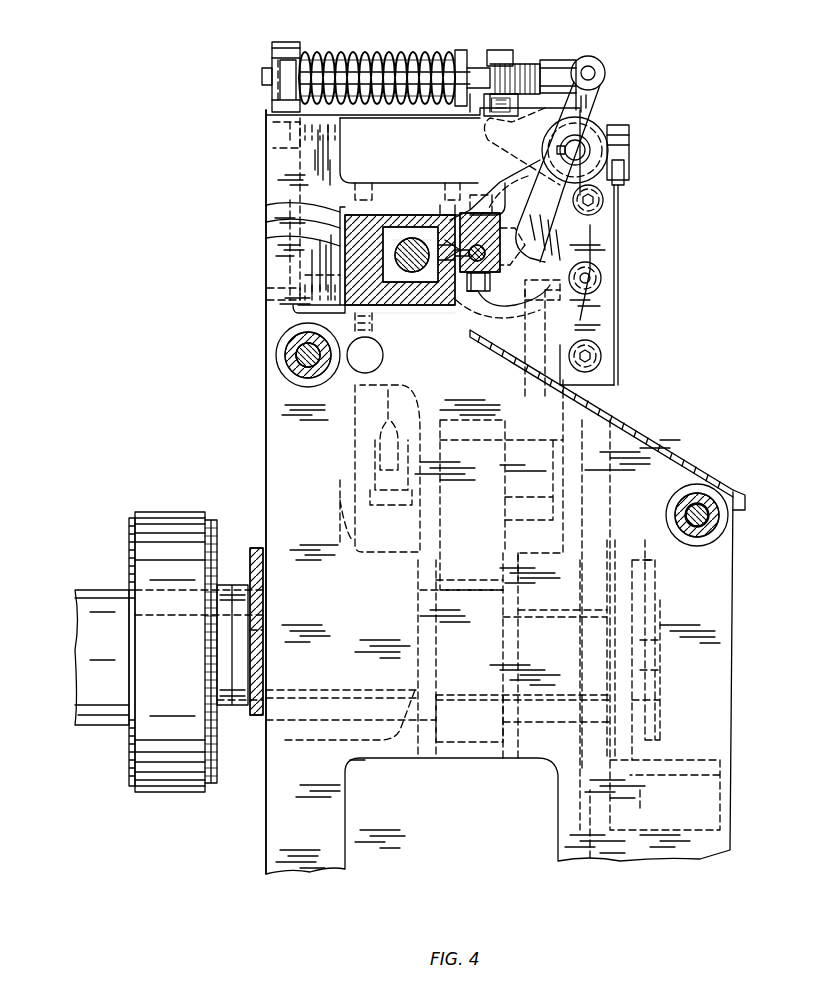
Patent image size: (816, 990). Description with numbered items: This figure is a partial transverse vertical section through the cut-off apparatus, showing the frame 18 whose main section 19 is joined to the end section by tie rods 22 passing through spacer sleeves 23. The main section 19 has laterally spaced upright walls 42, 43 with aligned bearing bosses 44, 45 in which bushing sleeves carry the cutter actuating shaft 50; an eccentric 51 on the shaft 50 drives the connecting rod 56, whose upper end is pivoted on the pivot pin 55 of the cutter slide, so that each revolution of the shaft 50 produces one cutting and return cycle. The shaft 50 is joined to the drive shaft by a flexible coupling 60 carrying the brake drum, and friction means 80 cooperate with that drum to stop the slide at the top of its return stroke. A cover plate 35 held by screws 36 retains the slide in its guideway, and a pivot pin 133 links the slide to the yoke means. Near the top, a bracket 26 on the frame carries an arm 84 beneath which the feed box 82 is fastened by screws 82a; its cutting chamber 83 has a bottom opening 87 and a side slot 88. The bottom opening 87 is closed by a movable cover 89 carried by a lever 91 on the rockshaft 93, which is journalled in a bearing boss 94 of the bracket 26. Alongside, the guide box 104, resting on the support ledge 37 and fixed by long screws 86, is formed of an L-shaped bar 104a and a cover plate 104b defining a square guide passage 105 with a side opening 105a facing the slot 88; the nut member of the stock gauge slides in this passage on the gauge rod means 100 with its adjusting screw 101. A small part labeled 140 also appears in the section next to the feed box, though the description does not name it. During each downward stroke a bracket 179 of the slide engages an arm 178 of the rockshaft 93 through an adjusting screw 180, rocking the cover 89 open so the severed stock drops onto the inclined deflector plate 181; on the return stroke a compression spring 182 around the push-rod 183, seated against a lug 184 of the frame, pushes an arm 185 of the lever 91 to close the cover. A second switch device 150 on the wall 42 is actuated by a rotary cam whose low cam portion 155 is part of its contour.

The frame 18 is at (264, 406).
The main section 19 is at (264, 404).
The tie rods 22 is at (690, 530).
The spacer sleeves 23 is at (700, 495).
The bracket 26 is at (345, 158).
The cover plate 35 is at (600, 318).
The screws 36 is at (600, 357).
The support ledge 37 is at (400, 345).
The upright wall 42 is at (560, 825).
The upright wall 43 is at (345, 812).
The bearing boss 44 is at (534, 742).
The bearing boss 45 is at (325, 730).
The cutter actuating shaft 50 is at (366, 752).
The eccentric 51 is at (450, 752).
The pivot pin 55 is at (470, 492).
The connecting rod 56 is at (440, 538).
The flexible coupling 60 is at (232, 580).
The friction means 80 is at (168, 795).
The feed box 82 is at (456, 210).
The screws 82a is at (482, 196).
The cutting chamber 83 is at (510, 190).
The arm 84 is at (528, 170).
The screws 86 is at (366, 176).
The bottom opening 87 is at (486, 253).
The side slot 88 is at (440, 183).
The cover 89 is at (470, 295).
The lever 91 is at (560, 222).
The rockshaft 93 is at (598, 128).
The bearing boss 94 is at (580, 130).
The gauge rod means 100 is at (400, 240).
The adjusting screw 101 is at (395, 228).
The guide box 104 is at (300, 244).
The bar 104a is at (368, 313).
The cover plate 104b is at (348, 216).
The guide passage 105 is at (410, 285).
The side opening 105a is at (382, 235).
The pivot pin 133 is at (350, 518).
The pin 140 is at (517, 242).
The second switch device 150 is at (712, 862).
The low cam portion 155 is at (660, 715).
The arm 178 is at (520, 120).
The bracket 179 is at (476, 104).
The adjusting screw 180 is at (495, 50).
The inclined deflector plate 181 is at (636, 432).
The compression spring 182 is at (372, 58).
The push-rod 183 is at (545, 58).
The lug 184 is at (292, 44).
The arm 185 is at (604, 90).